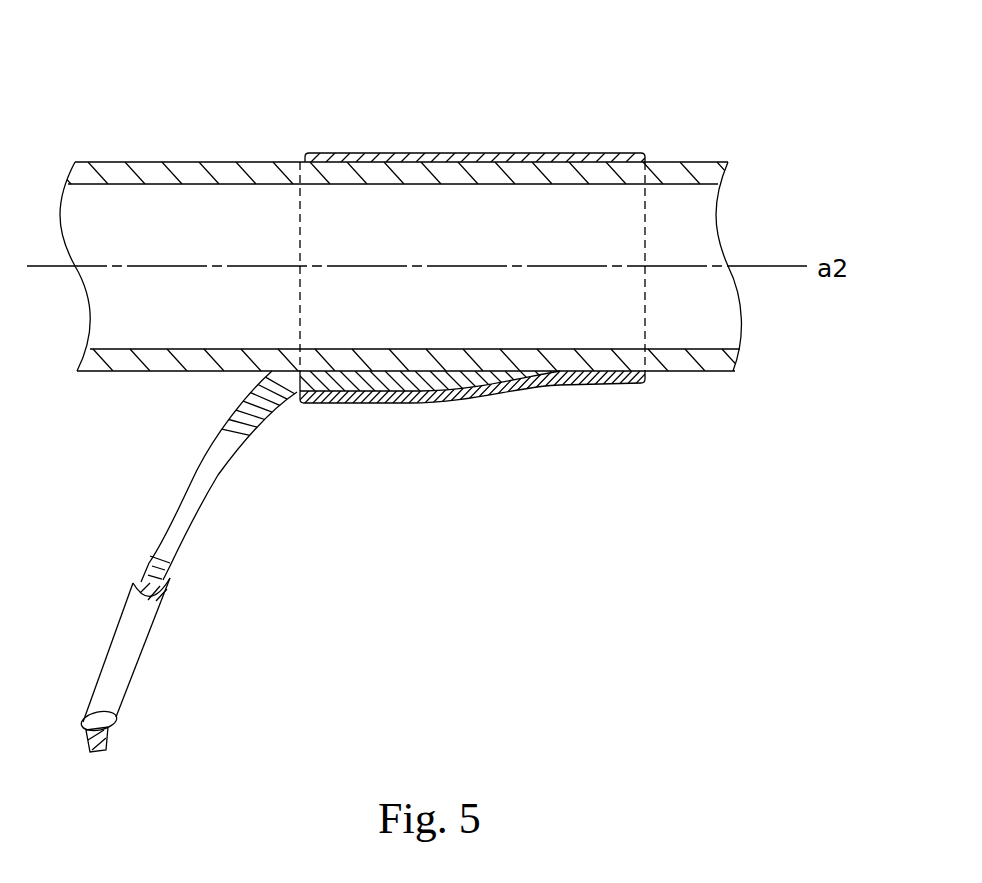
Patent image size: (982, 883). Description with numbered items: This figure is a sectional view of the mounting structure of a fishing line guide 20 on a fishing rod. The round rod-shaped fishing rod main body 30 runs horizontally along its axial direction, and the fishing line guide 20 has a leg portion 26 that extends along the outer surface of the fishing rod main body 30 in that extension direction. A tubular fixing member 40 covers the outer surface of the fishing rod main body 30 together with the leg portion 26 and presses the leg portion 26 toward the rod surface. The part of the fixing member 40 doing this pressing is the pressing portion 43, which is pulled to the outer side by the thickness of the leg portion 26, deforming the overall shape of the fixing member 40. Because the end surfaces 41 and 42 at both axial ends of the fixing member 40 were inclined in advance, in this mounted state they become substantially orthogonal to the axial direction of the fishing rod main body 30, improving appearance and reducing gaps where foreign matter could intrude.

The fishing line guide 20 is at (332, 561).
The leg portion 26 is at (286, 388).
The fishing rod main body 30 is at (142, 162).
The tubular fixing member 40 is at (531, 153).
The end surface 41 is at (300, 228).
The end surface 42 is at (647, 200).
The pressing portion 43 is at (380, 403).